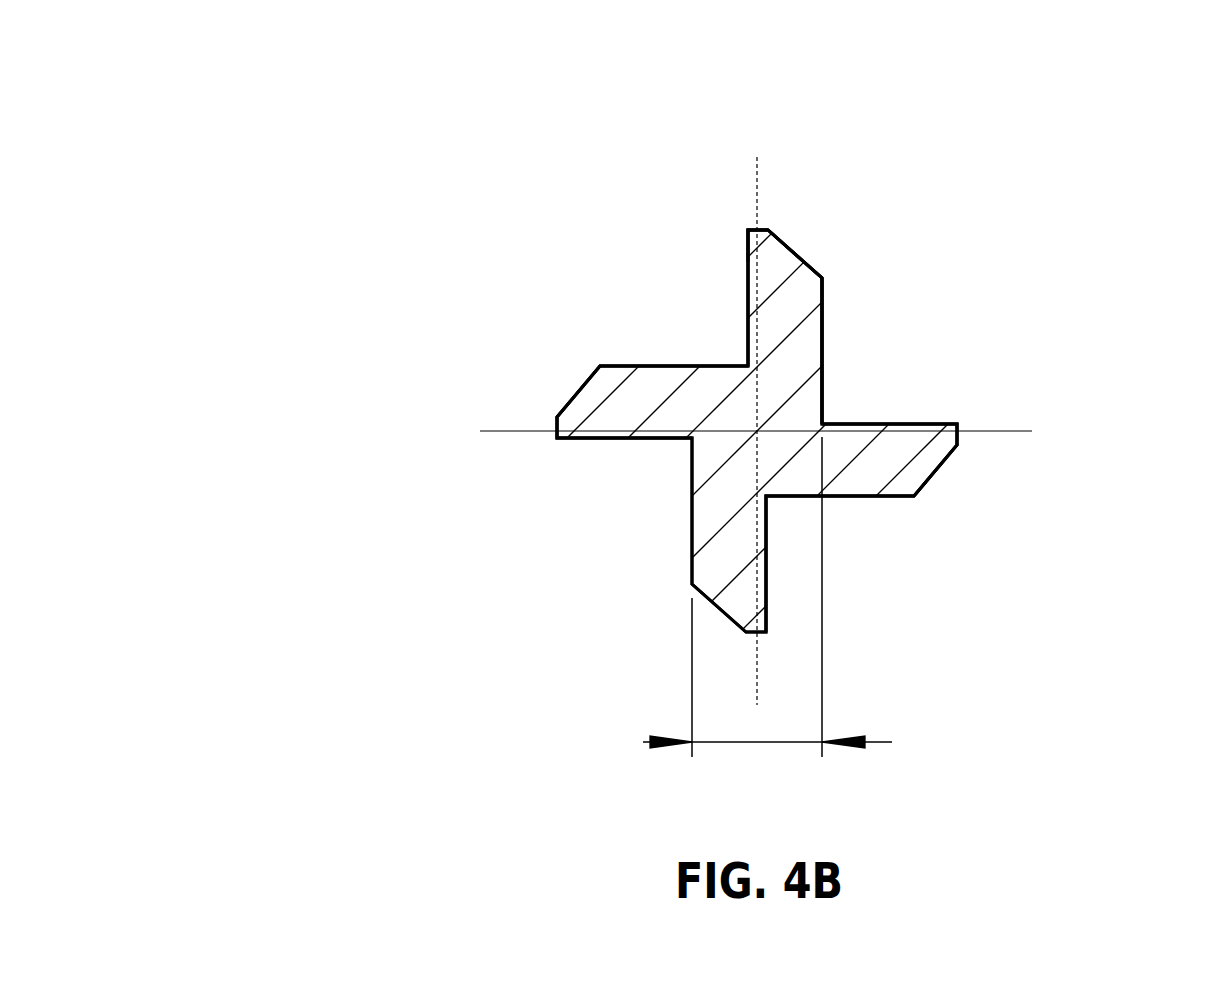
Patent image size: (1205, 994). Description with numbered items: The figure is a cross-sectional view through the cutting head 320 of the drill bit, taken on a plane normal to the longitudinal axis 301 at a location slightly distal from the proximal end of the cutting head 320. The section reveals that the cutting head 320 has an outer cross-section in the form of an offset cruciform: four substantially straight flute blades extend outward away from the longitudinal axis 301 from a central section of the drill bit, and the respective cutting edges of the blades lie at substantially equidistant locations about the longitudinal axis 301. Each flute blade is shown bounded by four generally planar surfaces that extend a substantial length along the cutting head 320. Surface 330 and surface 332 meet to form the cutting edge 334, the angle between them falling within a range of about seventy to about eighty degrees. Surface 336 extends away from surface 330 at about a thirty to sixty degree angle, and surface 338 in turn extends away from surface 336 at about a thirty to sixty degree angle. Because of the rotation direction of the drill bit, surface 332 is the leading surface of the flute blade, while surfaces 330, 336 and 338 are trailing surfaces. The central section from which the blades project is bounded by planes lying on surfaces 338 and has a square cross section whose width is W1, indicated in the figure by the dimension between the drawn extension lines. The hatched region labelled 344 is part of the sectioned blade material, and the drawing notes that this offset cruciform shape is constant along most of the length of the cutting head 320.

The cutting head 320 is at (460, 225).
The longitudinal axis 301 is at (755, 430).
The surface 330 is at (758, 230).
The cutting edge 334 is at (747, 230).
The surface 336 is at (798, 253).
The surface 338 is at (823, 325).
The surface 332 is at (957, 424).
The lateral protrusion 344 is at (607, 407).
The width W1 is at (717, 600).